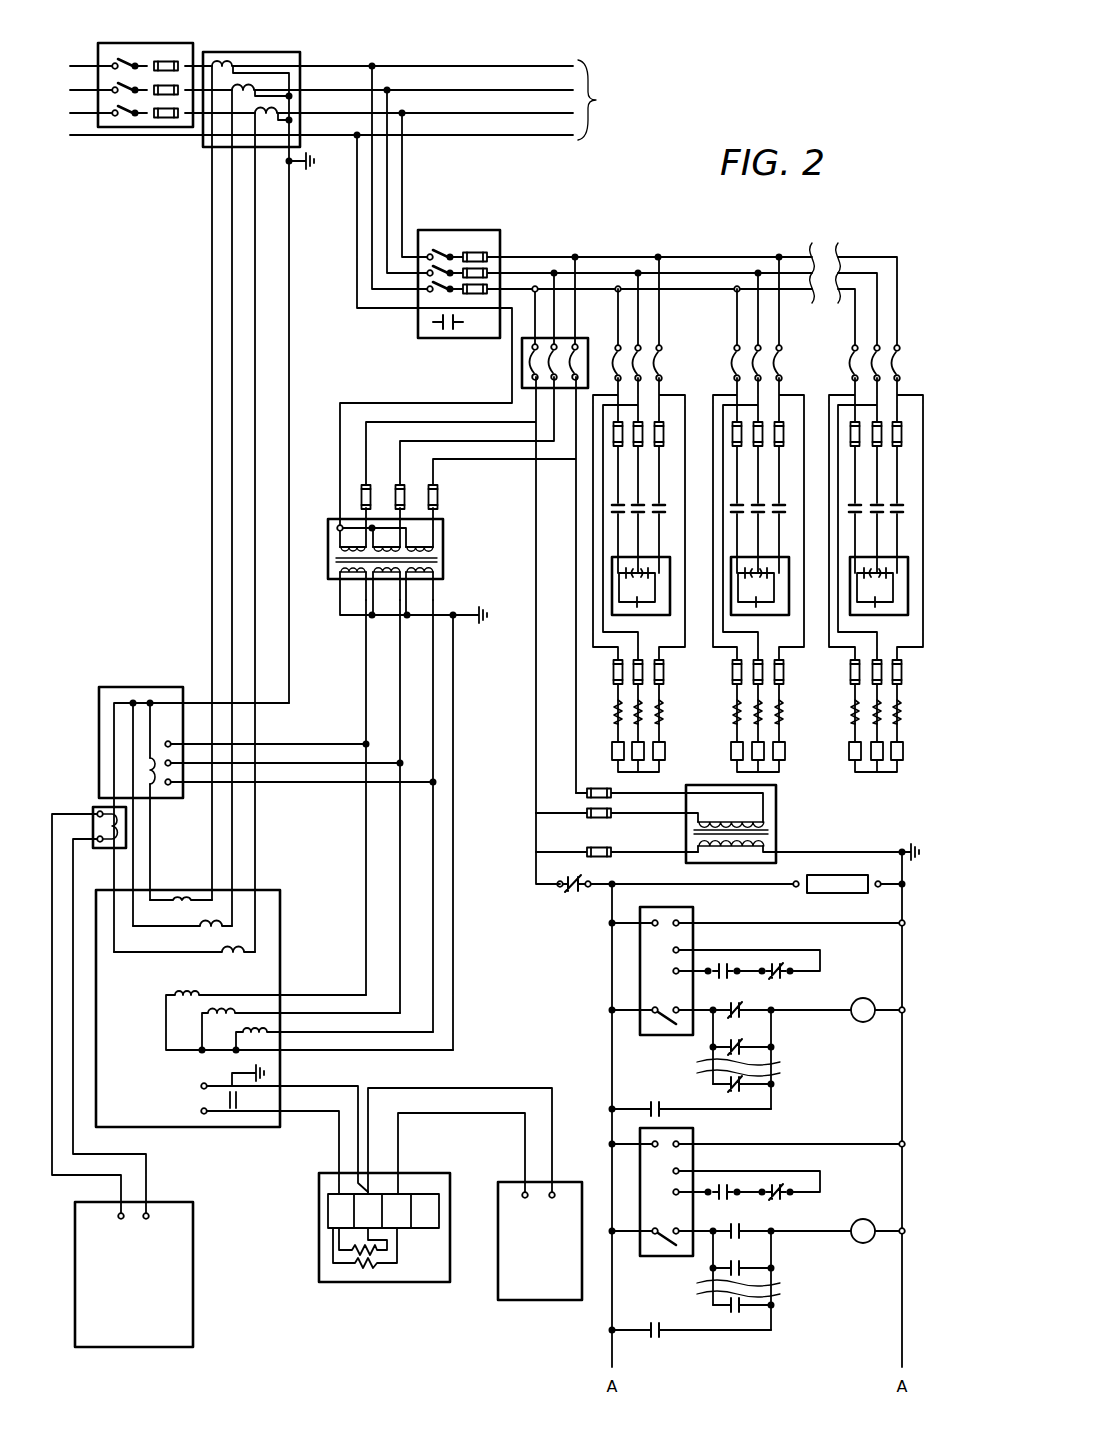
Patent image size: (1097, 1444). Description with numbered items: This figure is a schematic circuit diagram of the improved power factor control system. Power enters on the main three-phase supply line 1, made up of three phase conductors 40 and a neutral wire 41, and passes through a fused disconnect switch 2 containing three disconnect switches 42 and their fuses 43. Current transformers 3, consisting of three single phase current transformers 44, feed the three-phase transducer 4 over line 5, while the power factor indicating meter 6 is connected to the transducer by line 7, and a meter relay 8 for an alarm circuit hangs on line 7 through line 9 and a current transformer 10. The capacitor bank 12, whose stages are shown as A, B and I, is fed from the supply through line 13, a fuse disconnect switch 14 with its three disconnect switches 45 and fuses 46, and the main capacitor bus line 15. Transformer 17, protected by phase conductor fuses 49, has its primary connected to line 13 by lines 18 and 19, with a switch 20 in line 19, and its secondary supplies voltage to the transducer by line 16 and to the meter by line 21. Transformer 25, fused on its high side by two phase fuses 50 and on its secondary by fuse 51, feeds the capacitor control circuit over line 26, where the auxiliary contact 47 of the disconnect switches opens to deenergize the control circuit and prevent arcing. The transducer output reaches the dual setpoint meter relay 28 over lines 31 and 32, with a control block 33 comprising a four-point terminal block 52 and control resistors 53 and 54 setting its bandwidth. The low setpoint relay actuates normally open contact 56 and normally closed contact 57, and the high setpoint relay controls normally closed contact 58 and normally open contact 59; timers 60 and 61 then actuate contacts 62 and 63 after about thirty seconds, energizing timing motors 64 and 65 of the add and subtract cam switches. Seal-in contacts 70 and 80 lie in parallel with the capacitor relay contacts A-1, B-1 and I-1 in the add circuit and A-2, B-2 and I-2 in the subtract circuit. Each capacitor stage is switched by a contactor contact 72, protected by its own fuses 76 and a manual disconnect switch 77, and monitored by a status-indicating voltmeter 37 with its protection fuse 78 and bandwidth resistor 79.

The main three-phase supply line 1 is at (598, 100).
The fused disconnect switch 2 is at (160, 43).
The current transformers 3 is at (245, 52).
The three-phase transducer 4 is at (280, 942).
The line 5 is at (253, 445).
The power factor indicating meter 6 is at (127, 687).
The line 7 is at (145, 870).
The meter relay 8 is at (75, 1279).
The line 9 is at (73, 992).
The current transformer 10 is at (94, 808).
The capacitor bank 12 is at (681, 250).
The line 13 is at (404, 168).
The fuse disconnect switch 14 is at (490, 237).
The main capacitor bus line 15 is at (712, 289).
The line 16 is at (397, 876).
The transformer 17 is at (443, 545).
The line 18 is at (482, 459).
The line 19 is at (576, 312).
The switch 20 is at (522, 367).
The line 21 is at (307, 784).
The transformer 25 is at (771, 820).
The line 26 is at (580, 852).
The dual setpoint meter relay 28 is at (870, 848).
The line 31 is at (292, 1146).
The line 32 is at (470, 1088).
The control block 33 is at (430, 1283).
The capacitor status-indicating voltmeter 37 is at (914, 750).
The phase conductors 40 is at (473, 112).
The neutral wire 41 is at (495, 137).
The disconnect switches 42 is at (124, 60).
The fuses 43 is at (165, 120).
The single phase current transformers 44 is at (246, 88).
The single-phase disconnect switches 45 is at (440, 250).
The fuses 46 is at (475, 252).
The auxiliary contact 47 is at (440, 332).
The phase conductor fuses 49 is at (438, 496).
The phase fuses 50 is at (615, 820).
The fuse 51 is at (612, 858).
The four-point terminal block 52 is at (328, 1210).
The control resistor 53 is at (358, 1248).
The control resistor 54 is at (360, 1268).
The normally open contact 56 is at (722, 962).
The normally closed contact 57 is at (780, 1199).
The normally closed contact 58 is at (780, 978).
The normally open contact 59 is at (722, 1183).
The timer 60 is at (640, 988).
The timer 61 is at (640, 1204).
The contact 62 is at (662, 1027).
The contact 63 is at (662, 1248).
The timing motor 64 is at (866, 1022).
The timing motor 65 is at (866, 1243).
The seal-in contact 70 is at (657, 1102).
The contactor contact 72 is at (662, 496).
The fuses 76 is at (924, 390).
The manual disconnect switch 77 is at (920, 343).
The protection fuse 78 is at (914, 672).
The resistor 79 is at (914, 712).
The seal-in contact 80 is at (660, 1338).
The capacitor stage A is at (612, 582).
The capacitor stage B is at (731, 580).
The capacitor stage I is at (908, 582).
The capacitor relay contact A-1 is at (748, 1015).
The capacitor relay contact B-1 is at (748, 1045).
The capacitor relay contact I-1 is at (748, 1088).
The capacitor relay contact A-2 is at (748, 1236).
The capacitor relay contact B-2 is at (748, 1266).
The capacitor relay contact I-2 is at (748, 1309).